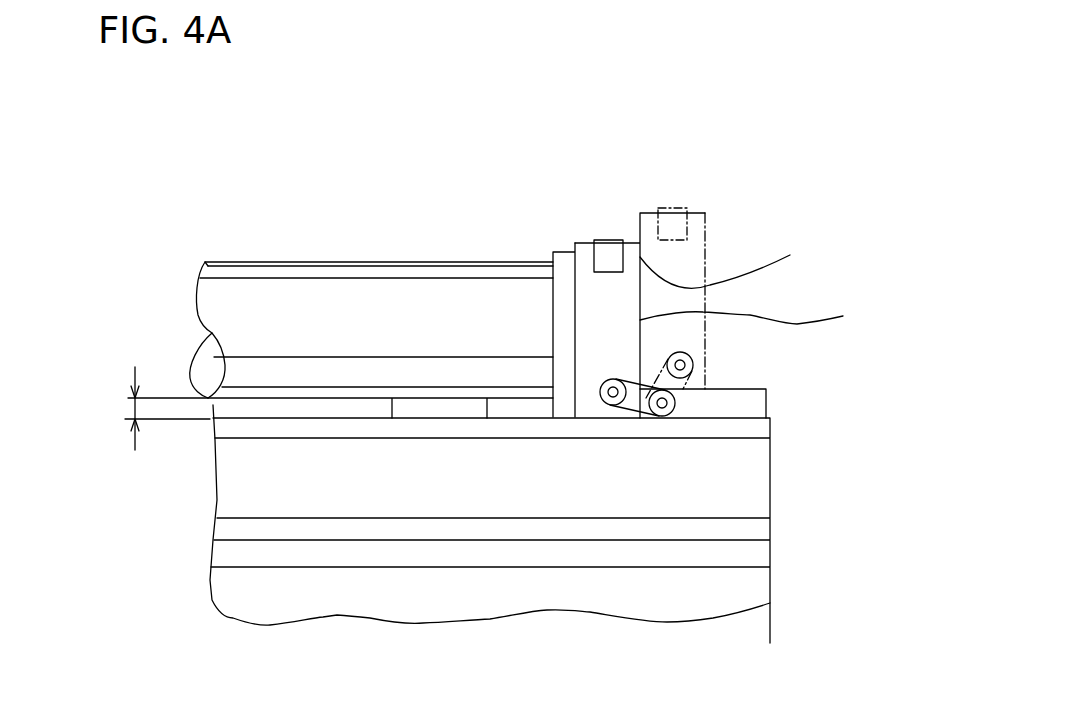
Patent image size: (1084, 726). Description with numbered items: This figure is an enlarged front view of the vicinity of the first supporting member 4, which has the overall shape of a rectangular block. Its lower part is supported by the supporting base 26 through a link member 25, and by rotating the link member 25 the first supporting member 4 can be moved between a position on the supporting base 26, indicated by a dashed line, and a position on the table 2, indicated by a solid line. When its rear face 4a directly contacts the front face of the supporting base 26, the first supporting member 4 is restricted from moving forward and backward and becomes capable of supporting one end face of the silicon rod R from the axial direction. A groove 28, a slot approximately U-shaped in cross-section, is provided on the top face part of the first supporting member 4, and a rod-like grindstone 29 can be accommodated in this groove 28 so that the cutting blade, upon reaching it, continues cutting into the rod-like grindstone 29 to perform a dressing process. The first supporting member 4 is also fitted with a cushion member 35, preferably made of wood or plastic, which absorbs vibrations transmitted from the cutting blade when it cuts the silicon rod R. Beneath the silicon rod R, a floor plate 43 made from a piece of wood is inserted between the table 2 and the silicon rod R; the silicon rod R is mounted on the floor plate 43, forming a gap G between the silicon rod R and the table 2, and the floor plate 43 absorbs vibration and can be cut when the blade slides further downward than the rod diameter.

The silicon rod R is at (253, 267).
The gap G is at (153, 408).
The table 2 is at (743, 482).
The floor plate 43 is at (430, 408).
The cushion member 35 is at (550, 253).
The first supporting member 4 is at (582, 250).
The rod-like grindstone 29 is at (612, 242).
The groove 28 is at (722, 255).
The rear face 4a is at (759, 313).
The supporting base 26 is at (757, 399).
The link member 25 is at (645, 400).